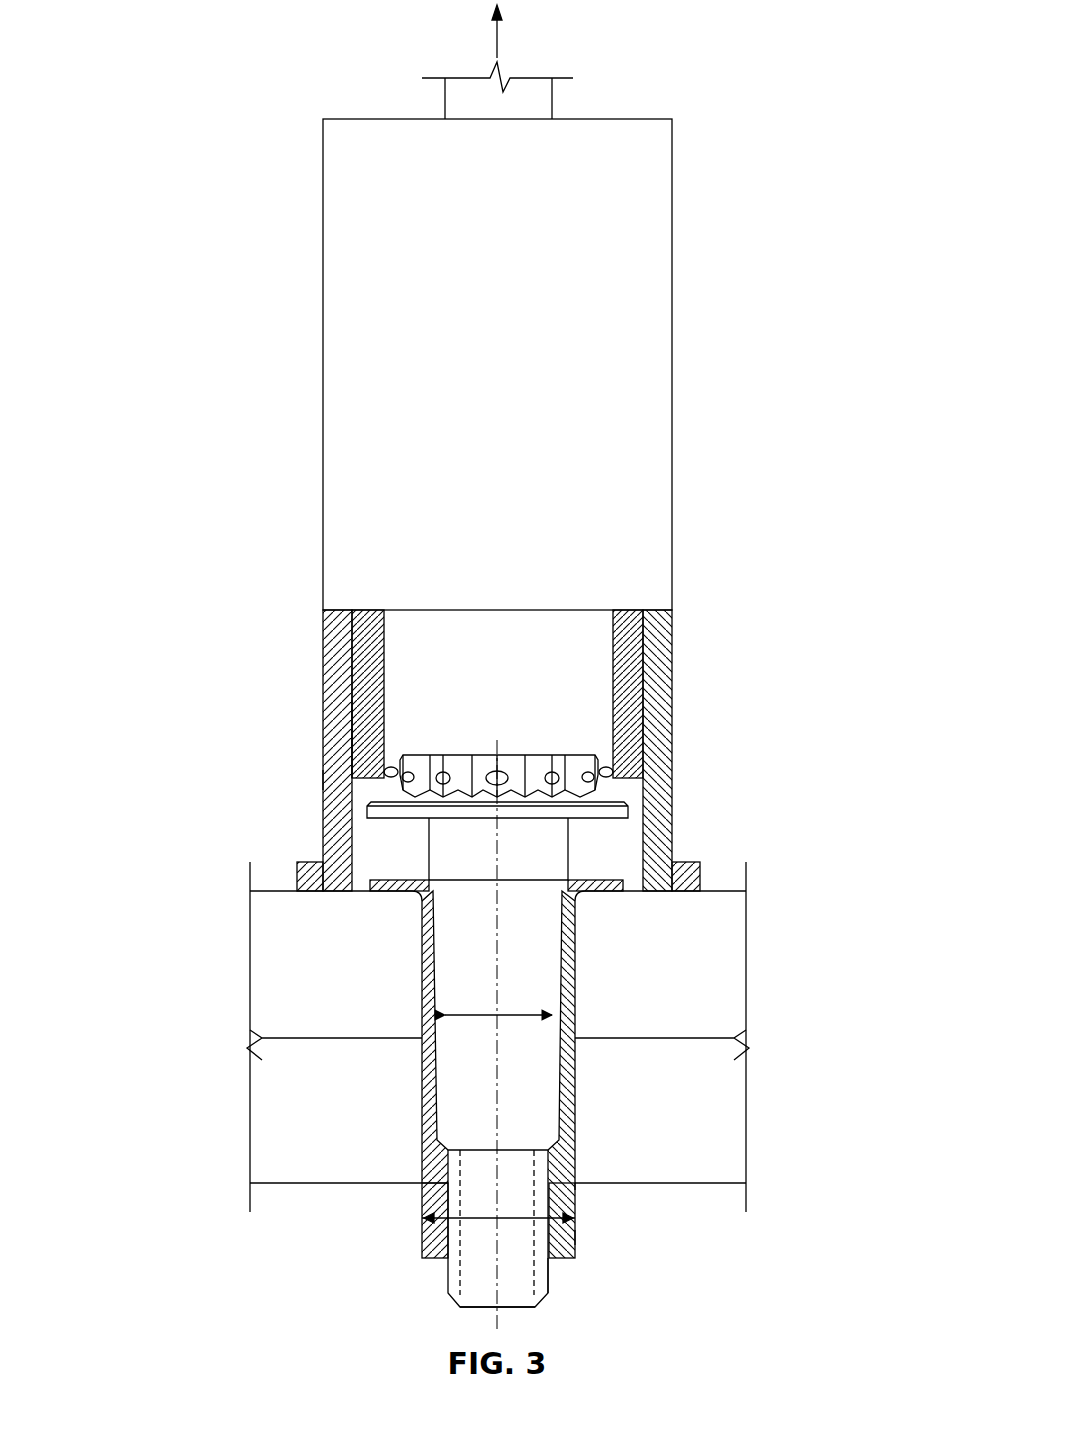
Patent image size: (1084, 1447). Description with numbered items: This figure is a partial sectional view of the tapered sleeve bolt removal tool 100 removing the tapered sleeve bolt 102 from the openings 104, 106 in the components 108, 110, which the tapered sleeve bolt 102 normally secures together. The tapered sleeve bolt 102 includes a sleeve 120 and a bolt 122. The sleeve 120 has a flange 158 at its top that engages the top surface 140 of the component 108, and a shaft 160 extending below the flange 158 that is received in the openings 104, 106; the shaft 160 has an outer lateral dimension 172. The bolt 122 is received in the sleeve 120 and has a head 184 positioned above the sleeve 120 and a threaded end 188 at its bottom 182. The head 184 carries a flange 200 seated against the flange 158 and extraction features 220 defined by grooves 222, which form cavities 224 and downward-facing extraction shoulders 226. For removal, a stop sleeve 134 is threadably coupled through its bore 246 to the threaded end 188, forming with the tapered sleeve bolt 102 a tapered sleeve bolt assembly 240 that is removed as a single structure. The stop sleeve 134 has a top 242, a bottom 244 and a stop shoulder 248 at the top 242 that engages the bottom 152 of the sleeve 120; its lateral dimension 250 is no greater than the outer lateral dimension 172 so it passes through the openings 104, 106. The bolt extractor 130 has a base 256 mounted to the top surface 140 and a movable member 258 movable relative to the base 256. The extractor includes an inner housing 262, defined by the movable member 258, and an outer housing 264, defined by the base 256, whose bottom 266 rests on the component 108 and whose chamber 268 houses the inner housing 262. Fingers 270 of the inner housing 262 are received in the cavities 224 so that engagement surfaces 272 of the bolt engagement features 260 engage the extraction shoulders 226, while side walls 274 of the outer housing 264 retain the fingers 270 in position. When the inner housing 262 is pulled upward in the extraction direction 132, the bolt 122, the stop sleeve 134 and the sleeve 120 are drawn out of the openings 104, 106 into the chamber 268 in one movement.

The tapered sleeve bolt removal tool 100 is at (732, 90).
The tapered sleeve bolt 102 is at (440, 1325).
The opening 104 is at (414, 982).
The opening 106 is at (414, 1108).
The component 108 is at (255, 905).
The component 110 is at (250, 1045).
The sleeve 120 is at (573, 1122).
The bolt 122 is at (535, 1088).
The bolt extractor 130 is at (686, 280).
The extraction direction 132 is at (500, 40).
The stop sleeve 134 is at (570, 1237).
The top surface 140 is at (722, 891).
The bottom 152 is at (572, 1185).
The flange 158 is at (612, 878).
The shaft 160 is at (573, 977).
The outer lateral dimension 172 is at (507, 1015).
The bottom 182 is at (515, 1310).
The head 184 is at (580, 765).
The threaded end 188 is at (548, 1275).
The flange 200 is at (623, 810).
The extraction feature 220 is at (381, 789).
The groove 222 is at (452, 760).
The cavity 224 is at (614, 788).
The extraction shoulder 226 is at (605, 772).
The tapered sleeve bolt assembly 240 is at (270, 1265).
The top 242 is at (435, 1180).
The bottom 244 is at (435, 1262).
The bore 246 is at (434, 1243).
The stop shoulder 248 is at (440, 1185).
The lateral dimension 250 is at (458, 1250).
The base 256 is at (295, 875).
The movable member 258 is at (362, 688).
The bolt engagement feature 260 is at (330, 780).
The inner housing 262 is at (362, 712).
The outer housing 264 is at (323, 778).
The bottom 266 is at (300, 900).
The chamber 268 is at (368, 845).
The finger 270 is at (632, 700).
The engagement surface 272 is at (388, 768).
The side wall 274 is at (643, 682).